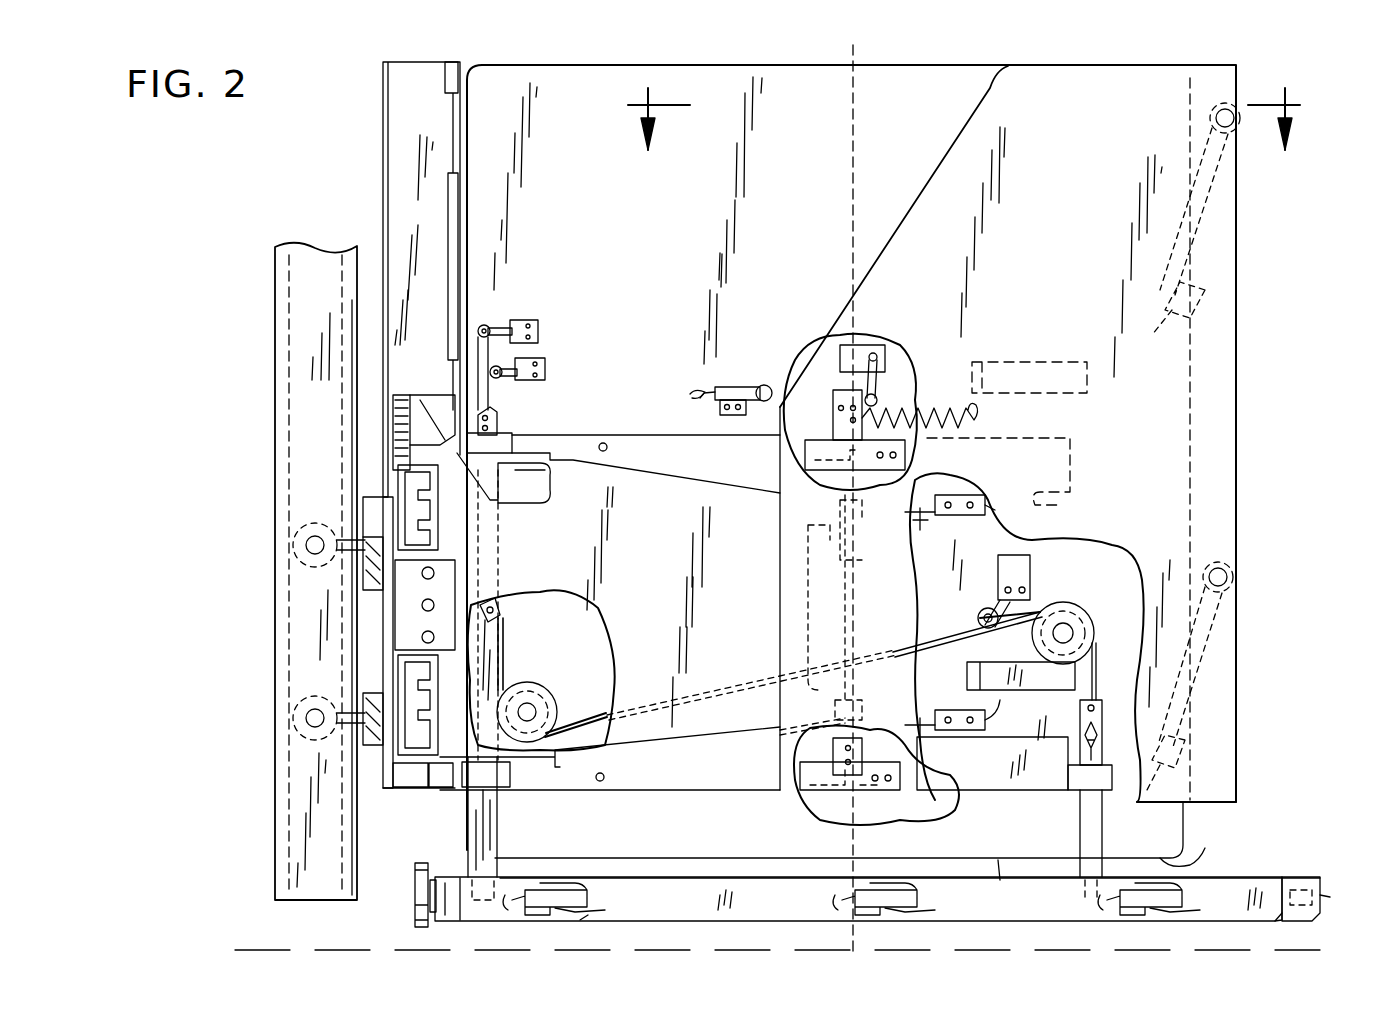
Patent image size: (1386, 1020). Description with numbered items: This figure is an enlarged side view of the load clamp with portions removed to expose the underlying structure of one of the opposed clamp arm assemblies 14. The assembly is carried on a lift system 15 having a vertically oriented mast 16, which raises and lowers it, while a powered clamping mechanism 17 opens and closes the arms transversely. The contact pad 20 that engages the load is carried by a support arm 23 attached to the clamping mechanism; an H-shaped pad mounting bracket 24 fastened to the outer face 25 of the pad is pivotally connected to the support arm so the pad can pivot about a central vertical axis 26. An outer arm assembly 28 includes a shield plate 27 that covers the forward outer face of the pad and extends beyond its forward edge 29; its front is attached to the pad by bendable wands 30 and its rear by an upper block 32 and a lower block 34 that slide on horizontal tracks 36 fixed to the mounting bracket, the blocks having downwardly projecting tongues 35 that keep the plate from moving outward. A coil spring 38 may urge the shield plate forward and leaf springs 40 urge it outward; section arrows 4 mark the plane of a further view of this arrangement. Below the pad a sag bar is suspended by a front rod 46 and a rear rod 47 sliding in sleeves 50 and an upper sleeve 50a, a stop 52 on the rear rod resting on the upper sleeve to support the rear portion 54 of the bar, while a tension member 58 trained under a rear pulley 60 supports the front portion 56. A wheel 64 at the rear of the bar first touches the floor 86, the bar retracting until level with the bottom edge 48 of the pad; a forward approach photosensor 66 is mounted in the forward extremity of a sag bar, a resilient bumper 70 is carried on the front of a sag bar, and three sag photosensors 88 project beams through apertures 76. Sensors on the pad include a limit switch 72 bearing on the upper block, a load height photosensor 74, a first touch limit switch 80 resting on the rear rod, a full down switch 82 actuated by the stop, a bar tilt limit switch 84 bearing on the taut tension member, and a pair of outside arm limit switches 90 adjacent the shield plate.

The section line 4- 4 is at (963, 113).
The clamp arm assemblies 14 is at (353, 185).
The lift system 15 is at (205, 722).
The mast 16 is at (290, 427).
The powered clamping mechanism 17 is at (390, 822).
The contact pad 20 is at (570, 58).
The support arm 23 is at (648, 607).
The pad mounting bracket 24 is at (625, 435).
The outer face 25 is at (628, 220).
The central vertical axis 26 is at (852, 145).
The shield plate 27 is at (765, 612).
The outer arm assembly 28 is at (1200, 62).
The forward edge 29 is at (1190, 362).
The bendable wands 30 is at (1215, 225).
The upper block 32 is at (833, 430).
The lower block 34 is at (862, 745).
The tongues 35 is at (795, 460).
The tracks 36 is at (862, 472).
The coil spring 38 is at (935, 405).
The leaf springs 40 is at (1060, 362).
The front rod 46 is at (1102, 824).
The rear rod 47 is at (500, 565).
The bottom edge 48 is at (1189, 852).
The sleeves 50 is at (497, 790).
The upper sleeve 50a is at (525, 478).
The stop 52 is at (497, 416).
The rear portion of the sag bar 54 is at (560, 925).
The front portion of the sag bar 56 is at (1192, 930).
The tension member 58 is at (575, 720).
The rear pulley 60 is at (540, 695).
The wheel 64 is at (415, 912).
The forward approach photosensor 66 is at (1320, 912).
The resilient bumper 70 is at (1300, 921).
The limit switch 72 is at (885, 345).
The load height photosensor 74 is at (735, 387).
The aperture 76 is at (768, 388).
The first touch limit switch 80 is at (530, 320).
The full down switch 82 is at (548, 365).
The bar tilt limit switch 84 is at (1032, 571).
The floor 86 is at (245, 950).
The sag photosensors 88 is at (605, 910).
The outside arm limit switches 90 is at (950, 515).